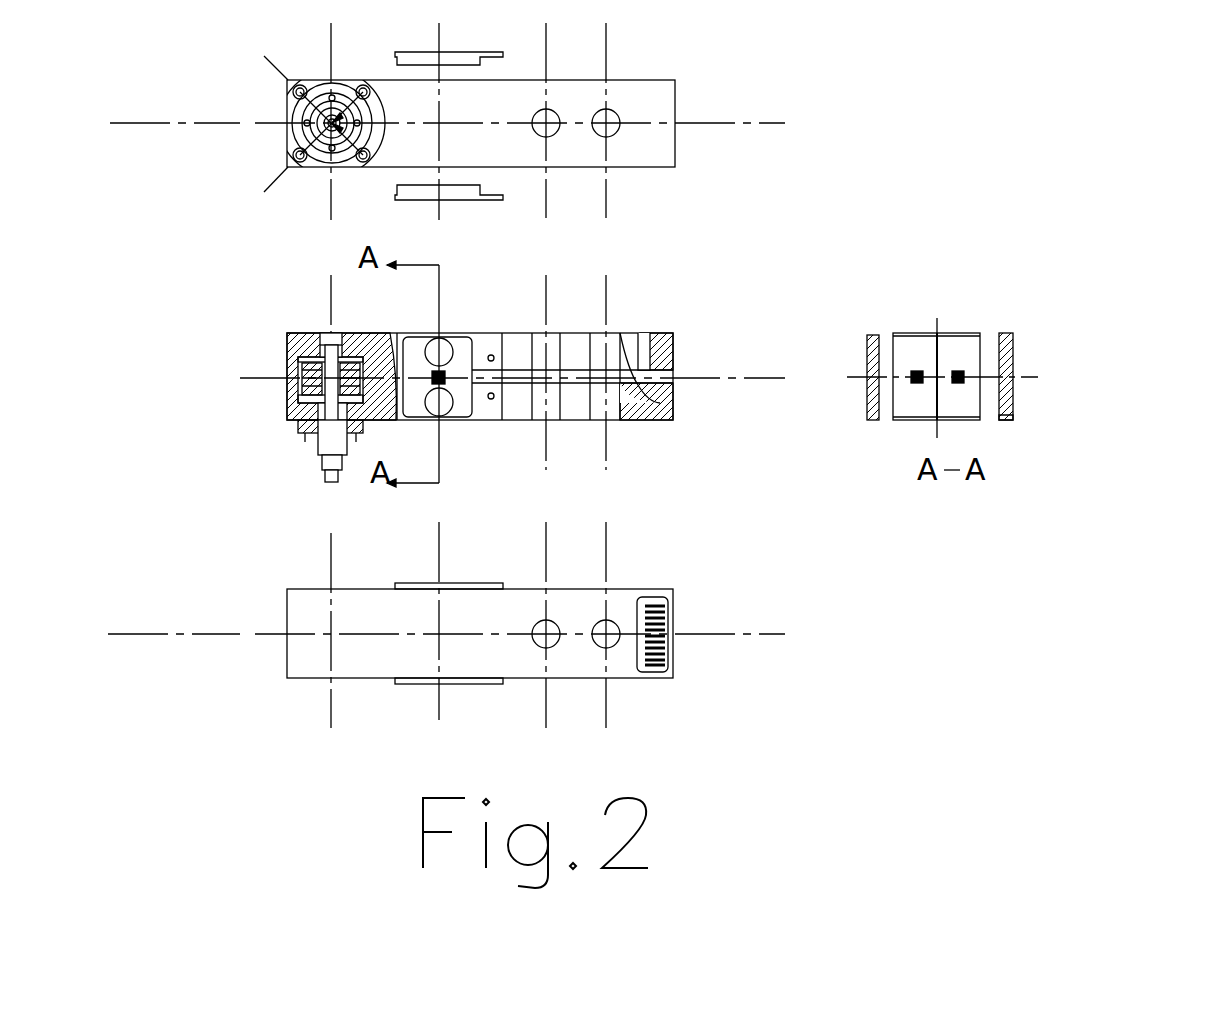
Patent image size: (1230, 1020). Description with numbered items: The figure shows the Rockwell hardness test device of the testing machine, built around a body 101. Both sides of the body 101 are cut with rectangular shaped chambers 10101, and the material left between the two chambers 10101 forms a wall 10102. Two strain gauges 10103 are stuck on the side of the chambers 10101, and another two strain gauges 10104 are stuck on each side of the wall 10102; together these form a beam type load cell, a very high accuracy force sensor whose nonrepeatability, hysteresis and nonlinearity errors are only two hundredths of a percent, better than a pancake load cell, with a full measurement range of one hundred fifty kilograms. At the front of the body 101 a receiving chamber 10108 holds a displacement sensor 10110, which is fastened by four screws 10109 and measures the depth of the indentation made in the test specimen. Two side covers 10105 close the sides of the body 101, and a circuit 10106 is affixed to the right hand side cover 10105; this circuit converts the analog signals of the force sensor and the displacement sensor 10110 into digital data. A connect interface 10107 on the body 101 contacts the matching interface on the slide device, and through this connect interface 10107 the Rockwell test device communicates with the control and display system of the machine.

The Rockwell test device body 101 is at (557, 340).
The rectangular shaped chamber 10101 is at (957, 338).
The wall 10102 is at (940, 360).
The strain gauge 10103 is at (407, 373).
The strain gauge 10104 is at (443, 382).
The side cover 10105 is at (872, 337).
The circuit 10106 is at (1113, 459).
The connect interface 10107 is at (667, 657).
The receiving chamber 10108 is at (287, 397).
The screw 10109 is at (320, 433).
The displacement sensor 10110 is at (292, 410).